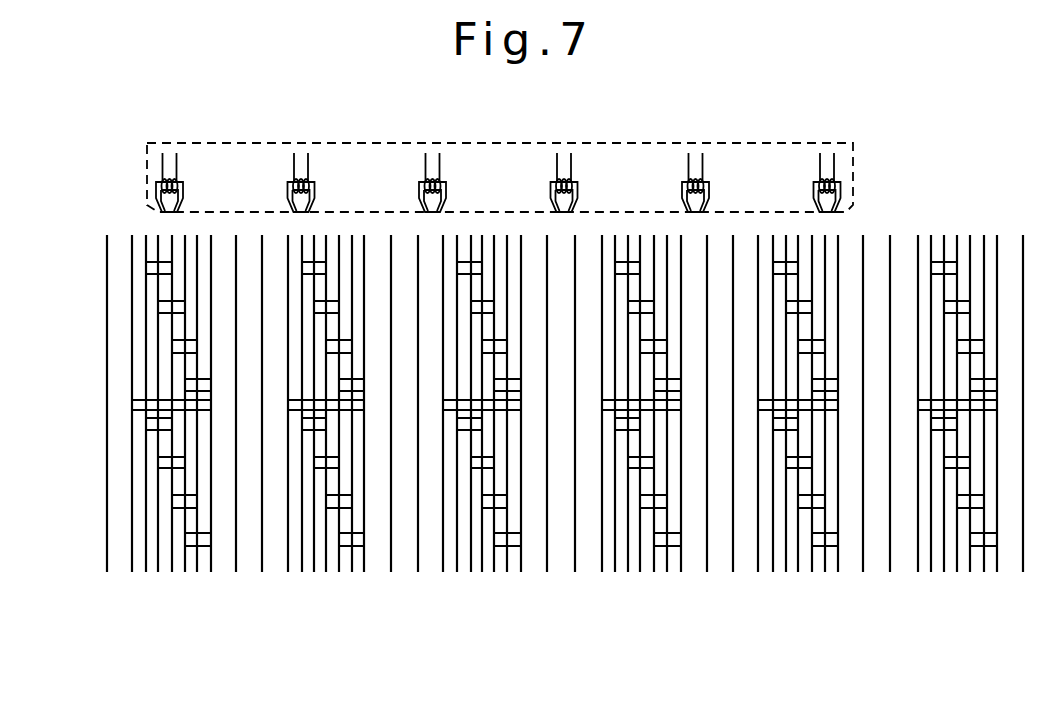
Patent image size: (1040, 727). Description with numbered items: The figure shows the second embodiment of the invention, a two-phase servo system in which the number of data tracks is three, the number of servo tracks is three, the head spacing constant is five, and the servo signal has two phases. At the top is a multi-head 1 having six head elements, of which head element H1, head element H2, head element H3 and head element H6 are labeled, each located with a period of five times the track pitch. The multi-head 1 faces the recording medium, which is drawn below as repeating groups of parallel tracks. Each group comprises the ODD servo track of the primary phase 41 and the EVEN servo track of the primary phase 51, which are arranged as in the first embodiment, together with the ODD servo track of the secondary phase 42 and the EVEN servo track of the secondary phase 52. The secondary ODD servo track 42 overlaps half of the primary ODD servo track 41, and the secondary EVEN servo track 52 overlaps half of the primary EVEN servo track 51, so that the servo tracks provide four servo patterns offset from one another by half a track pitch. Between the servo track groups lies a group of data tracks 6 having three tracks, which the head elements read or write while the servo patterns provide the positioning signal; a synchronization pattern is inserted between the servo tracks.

The multi-head 1 is at (853, 172).
The head element H1 is at (187, 194).
The head element H2 is at (318, 190).
The head element H3 is at (448, 192).
The head element H6 is at (811, 193).
The group of data tracks 6 is at (1026, 573).
The ODD servo track of the primary phase 41 is at (957, 573).
The EVEN servo track of the primary phase 51 is at (984, 573).
The ODD servo track of the secondary phase 42 is at (997, 638).
The EVEN servo track of the secondary phase 52 is at (997, 638).